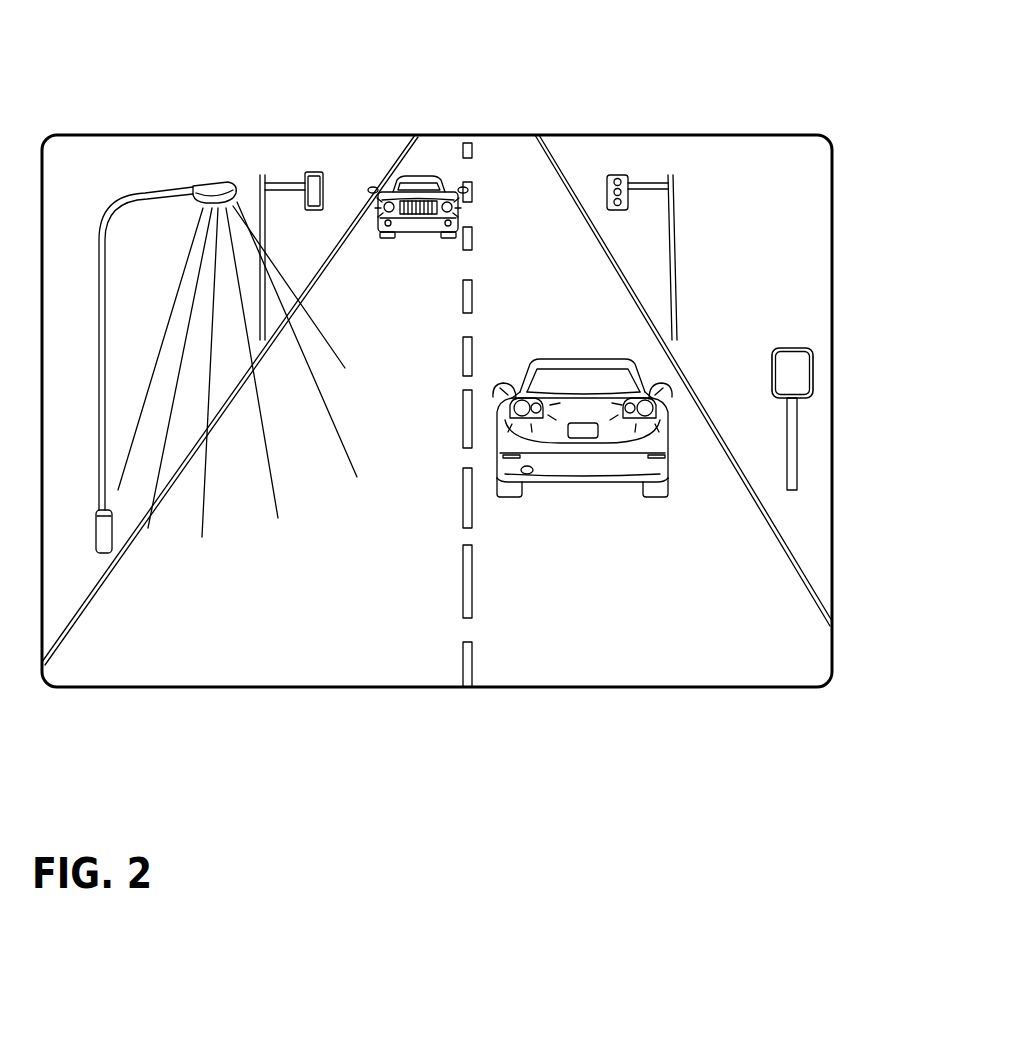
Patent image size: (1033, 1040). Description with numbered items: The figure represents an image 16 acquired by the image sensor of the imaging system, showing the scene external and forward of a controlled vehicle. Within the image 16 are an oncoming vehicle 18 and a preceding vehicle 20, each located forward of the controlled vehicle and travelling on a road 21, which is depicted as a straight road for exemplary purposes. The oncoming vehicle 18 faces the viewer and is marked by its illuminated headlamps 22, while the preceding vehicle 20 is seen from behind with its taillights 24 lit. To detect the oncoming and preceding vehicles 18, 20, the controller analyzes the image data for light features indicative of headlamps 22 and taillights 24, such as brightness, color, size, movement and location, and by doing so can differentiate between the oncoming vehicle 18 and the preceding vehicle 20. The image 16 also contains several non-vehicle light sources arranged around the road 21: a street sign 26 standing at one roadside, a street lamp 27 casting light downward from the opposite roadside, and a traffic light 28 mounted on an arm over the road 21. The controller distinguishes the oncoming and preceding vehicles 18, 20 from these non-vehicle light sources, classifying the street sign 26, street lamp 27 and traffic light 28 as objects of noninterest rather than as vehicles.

The image 16 is at (712, 87).
The oncoming vehicle 18 is at (418, 189).
The preceding vehicle 20 is at (623, 419).
The road 21 is at (768, 607).
The headlamps 22 is at (437, 220).
The taillights 24 is at (645, 418).
The street sign 26 is at (808, 365).
The street lamp 27 is at (220, 195).
The traffic light 28 is at (627, 175).